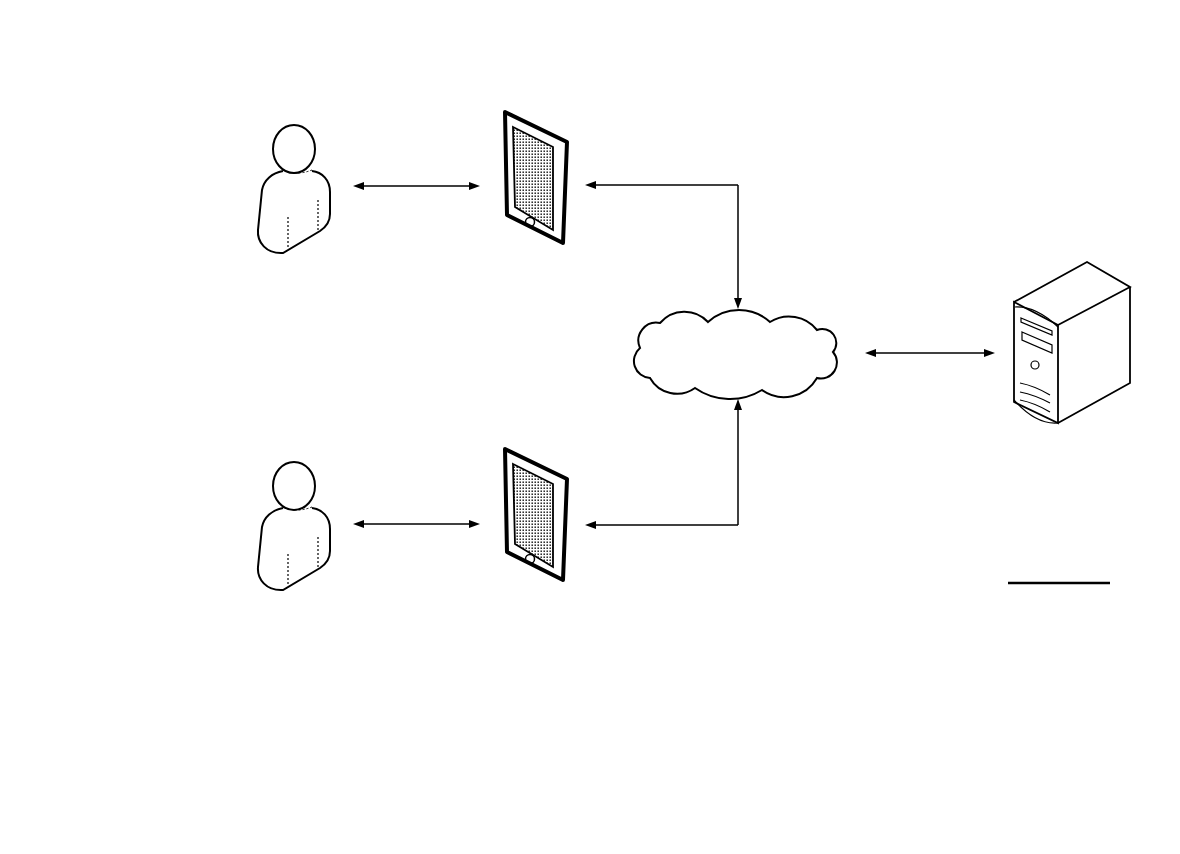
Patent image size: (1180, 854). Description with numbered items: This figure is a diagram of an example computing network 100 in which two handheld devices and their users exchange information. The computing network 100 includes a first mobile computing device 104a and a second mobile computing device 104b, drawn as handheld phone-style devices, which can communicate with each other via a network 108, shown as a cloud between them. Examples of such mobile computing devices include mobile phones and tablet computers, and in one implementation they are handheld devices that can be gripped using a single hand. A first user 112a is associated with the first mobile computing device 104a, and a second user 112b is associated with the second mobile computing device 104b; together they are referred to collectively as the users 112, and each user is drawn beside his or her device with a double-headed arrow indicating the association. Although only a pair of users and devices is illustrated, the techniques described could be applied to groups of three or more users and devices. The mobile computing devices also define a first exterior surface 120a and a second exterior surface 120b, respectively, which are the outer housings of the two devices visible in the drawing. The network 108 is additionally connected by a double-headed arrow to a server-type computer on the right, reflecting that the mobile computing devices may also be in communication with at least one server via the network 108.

The computing network 100 is at (905, 630).
The first mobile computing device 104a is at (512, 250).
The second mobile computing device 104b is at (512, 424).
The network 108 is at (832, 328).
The users 112 is at (1107, 272).
The first user 112a is at (293, 124).
The second user 112b is at (293, 461).
The first exterior surface 120a is at (567, 140).
The second exterior surface 120b is at (567, 579).